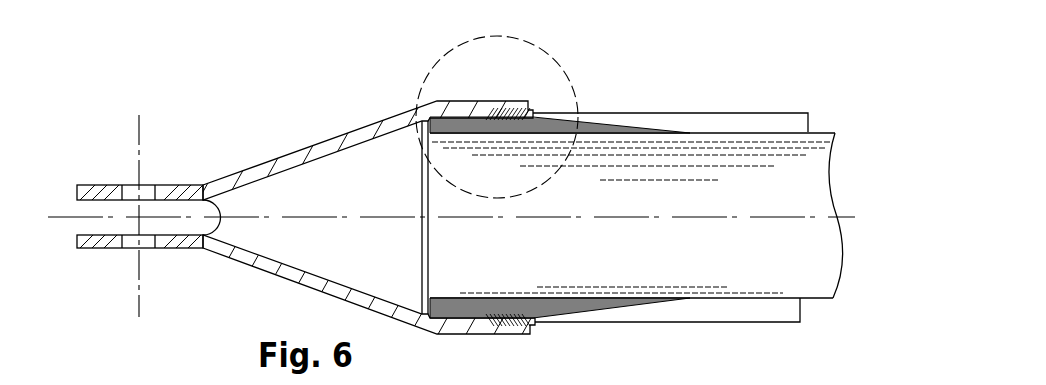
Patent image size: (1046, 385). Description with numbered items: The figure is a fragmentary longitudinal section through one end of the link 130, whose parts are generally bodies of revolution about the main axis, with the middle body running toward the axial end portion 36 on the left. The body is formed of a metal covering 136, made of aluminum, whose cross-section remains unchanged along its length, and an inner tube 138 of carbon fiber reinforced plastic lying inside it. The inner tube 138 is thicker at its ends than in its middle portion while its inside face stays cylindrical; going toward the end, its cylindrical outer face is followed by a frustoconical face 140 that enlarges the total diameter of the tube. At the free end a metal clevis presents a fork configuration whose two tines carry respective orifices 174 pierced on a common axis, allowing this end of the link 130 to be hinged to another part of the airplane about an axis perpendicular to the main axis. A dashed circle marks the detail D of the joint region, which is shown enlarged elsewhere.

The axial end portion 36 is at (97, 243).
The orifices 174 is at (150, 186).
The link 130 is at (636, 161).
The metal covering 136 is at (755, 112).
The inner tube 138 is at (765, 134).
The frustoconical face 140 is at (633, 128).
The detail D is at (531, 41).